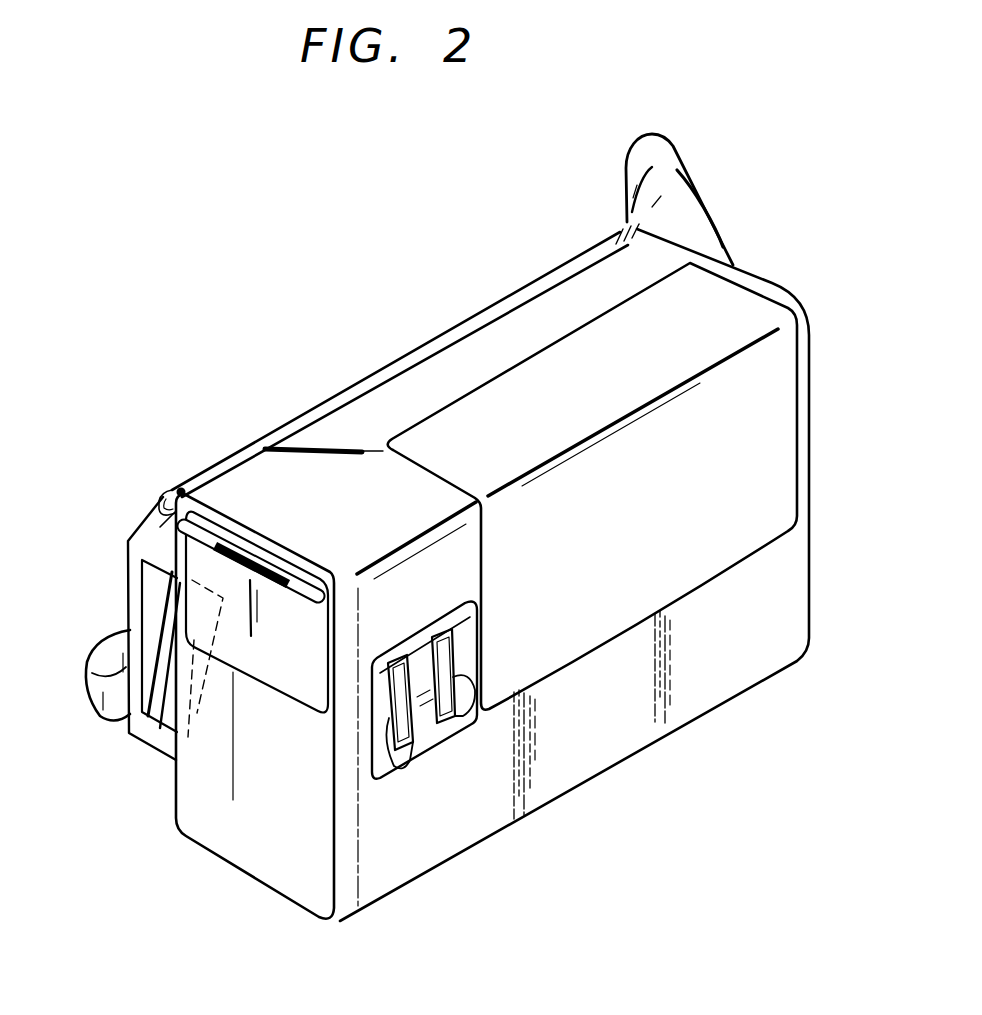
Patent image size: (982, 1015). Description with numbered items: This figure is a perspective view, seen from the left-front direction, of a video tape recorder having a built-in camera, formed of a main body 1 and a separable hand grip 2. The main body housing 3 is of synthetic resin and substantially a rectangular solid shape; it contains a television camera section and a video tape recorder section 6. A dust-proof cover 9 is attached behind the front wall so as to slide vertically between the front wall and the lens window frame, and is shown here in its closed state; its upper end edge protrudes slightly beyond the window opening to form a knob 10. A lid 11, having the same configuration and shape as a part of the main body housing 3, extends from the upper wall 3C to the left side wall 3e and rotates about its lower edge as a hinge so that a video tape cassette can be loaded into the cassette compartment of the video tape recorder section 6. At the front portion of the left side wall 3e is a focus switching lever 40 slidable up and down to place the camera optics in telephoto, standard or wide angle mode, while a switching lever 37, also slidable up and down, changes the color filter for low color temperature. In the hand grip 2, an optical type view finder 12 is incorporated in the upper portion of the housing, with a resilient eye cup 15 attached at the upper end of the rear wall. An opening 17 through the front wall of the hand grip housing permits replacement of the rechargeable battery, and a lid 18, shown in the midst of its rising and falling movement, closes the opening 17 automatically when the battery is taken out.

The main body 1 is at (801, 283).
The hand grip 2 is at (498, 284).
The main body housing 3 is at (809, 386).
The upper wall 3C is at (357, 473).
The left side wall 3e is at (690, 697).
The video tape recorder (VTR) section 6 is at (448, 405).
The dust-proof cover 9 is at (293, 683).
The knob 10 is at (273, 575).
The lid 11 is at (422, 440).
The optical type view finder 12 is at (178, 492).
The eye cup 15 is at (657, 150).
The opening 17 is at (146, 632).
The lid 18 is at (141, 626).
The switching lever 37 is at (453, 707).
The focus switching lever 40 is at (400, 773).